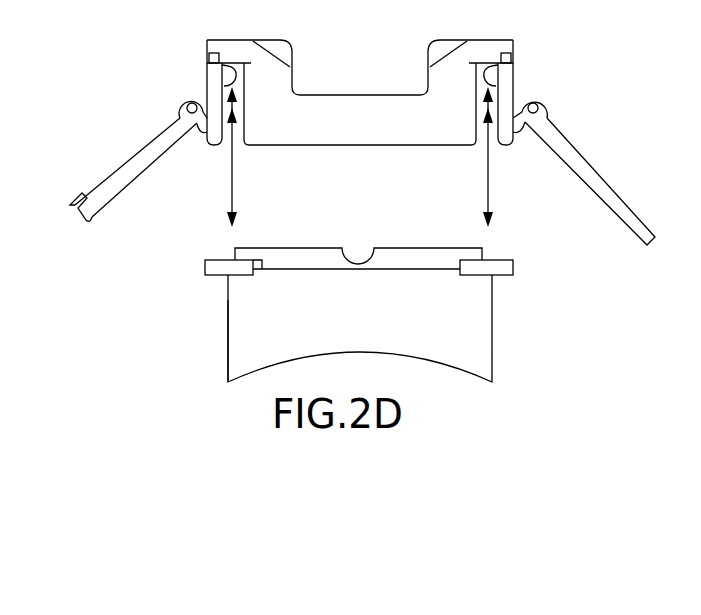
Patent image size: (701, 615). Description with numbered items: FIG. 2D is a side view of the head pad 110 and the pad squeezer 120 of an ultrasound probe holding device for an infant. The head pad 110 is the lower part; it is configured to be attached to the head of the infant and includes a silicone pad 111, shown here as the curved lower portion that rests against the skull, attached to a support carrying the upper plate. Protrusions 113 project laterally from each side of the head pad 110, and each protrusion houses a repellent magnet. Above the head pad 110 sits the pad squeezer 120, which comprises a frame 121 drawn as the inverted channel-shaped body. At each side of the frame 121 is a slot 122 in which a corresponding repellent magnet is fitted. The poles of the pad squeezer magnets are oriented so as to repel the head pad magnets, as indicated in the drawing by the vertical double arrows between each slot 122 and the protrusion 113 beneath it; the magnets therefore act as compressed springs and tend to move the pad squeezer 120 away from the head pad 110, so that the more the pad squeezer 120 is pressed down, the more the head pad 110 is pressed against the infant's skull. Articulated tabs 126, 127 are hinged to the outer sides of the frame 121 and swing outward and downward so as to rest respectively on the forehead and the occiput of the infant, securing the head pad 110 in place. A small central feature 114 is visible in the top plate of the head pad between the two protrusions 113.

The head pad 110 is at (502, 327).
The silicone pad 111 is at (243, 323).
The protrusion 113 is at (515, 262).
The notch 114 is at (358, 253).
The pad squeezer 120 is at (525, 48).
The frame 121 is at (348, 108).
The slot 122 is at (238, 83).
The articulated tab 126 is at (605, 172).
The articulated tab 127 is at (117, 181).